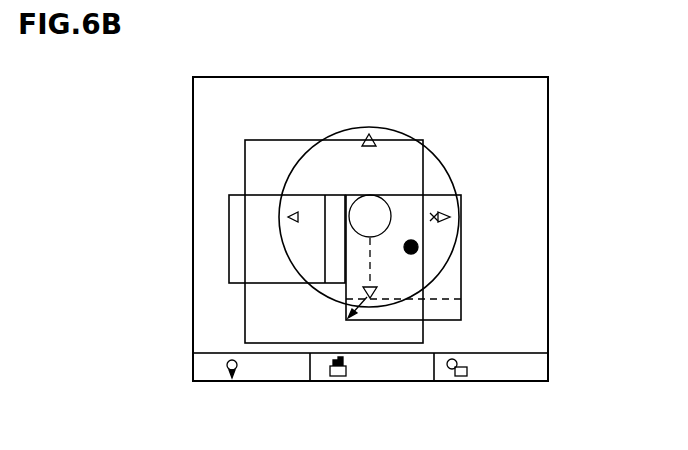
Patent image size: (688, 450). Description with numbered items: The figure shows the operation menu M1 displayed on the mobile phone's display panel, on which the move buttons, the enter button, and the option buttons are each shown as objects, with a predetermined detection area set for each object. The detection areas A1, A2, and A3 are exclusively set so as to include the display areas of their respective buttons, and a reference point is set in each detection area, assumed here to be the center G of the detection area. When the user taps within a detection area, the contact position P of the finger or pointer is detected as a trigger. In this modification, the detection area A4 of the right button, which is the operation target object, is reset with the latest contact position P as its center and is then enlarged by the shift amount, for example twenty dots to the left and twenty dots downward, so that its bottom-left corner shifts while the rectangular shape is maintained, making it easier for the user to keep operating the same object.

The operation menu M1 is at (495, 77).
The detection area A1 is at (351, 140).
The detection area A2 is at (418, 343).
The detection area A3 is at (230, 253).
The detection area of the right button A4 is at (418, 247).
The center of the detection area G is at (430, 220).
The contact position P is at (461, 242).